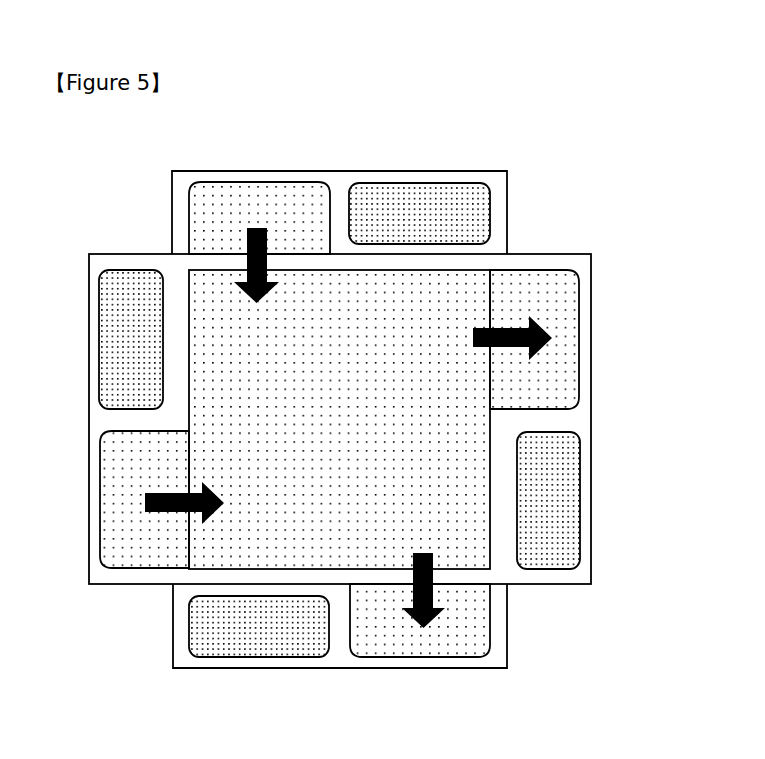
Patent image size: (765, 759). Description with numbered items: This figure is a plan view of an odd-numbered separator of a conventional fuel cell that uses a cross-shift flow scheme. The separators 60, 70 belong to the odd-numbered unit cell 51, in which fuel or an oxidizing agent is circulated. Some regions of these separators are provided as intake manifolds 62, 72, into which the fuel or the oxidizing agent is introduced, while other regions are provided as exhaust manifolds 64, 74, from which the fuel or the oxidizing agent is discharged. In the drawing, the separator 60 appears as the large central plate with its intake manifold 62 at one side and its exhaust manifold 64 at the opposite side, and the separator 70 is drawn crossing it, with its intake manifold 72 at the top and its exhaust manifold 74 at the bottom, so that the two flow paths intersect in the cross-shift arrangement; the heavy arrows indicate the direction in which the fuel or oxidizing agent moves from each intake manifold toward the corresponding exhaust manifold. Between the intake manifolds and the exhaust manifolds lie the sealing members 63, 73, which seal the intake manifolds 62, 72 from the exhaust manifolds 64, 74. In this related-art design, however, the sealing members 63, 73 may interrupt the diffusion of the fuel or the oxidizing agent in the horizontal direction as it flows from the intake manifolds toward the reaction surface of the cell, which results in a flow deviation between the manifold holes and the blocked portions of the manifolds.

The odd-numbered unit cell 51 is at (570, 203).
The separator 60 is at (591, 321).
The intake manifold 62 is at (127, 485).
The sealing member 63 is at (127, 418).
The exhaust manifold 64 is at (565, 361).
The separator 70 is at (172, 215).
The intake manifold 72 is at (253, 190).
The sealing member 73 is at (338, 210).
The exhaust manifold 74 is at (455, 640).